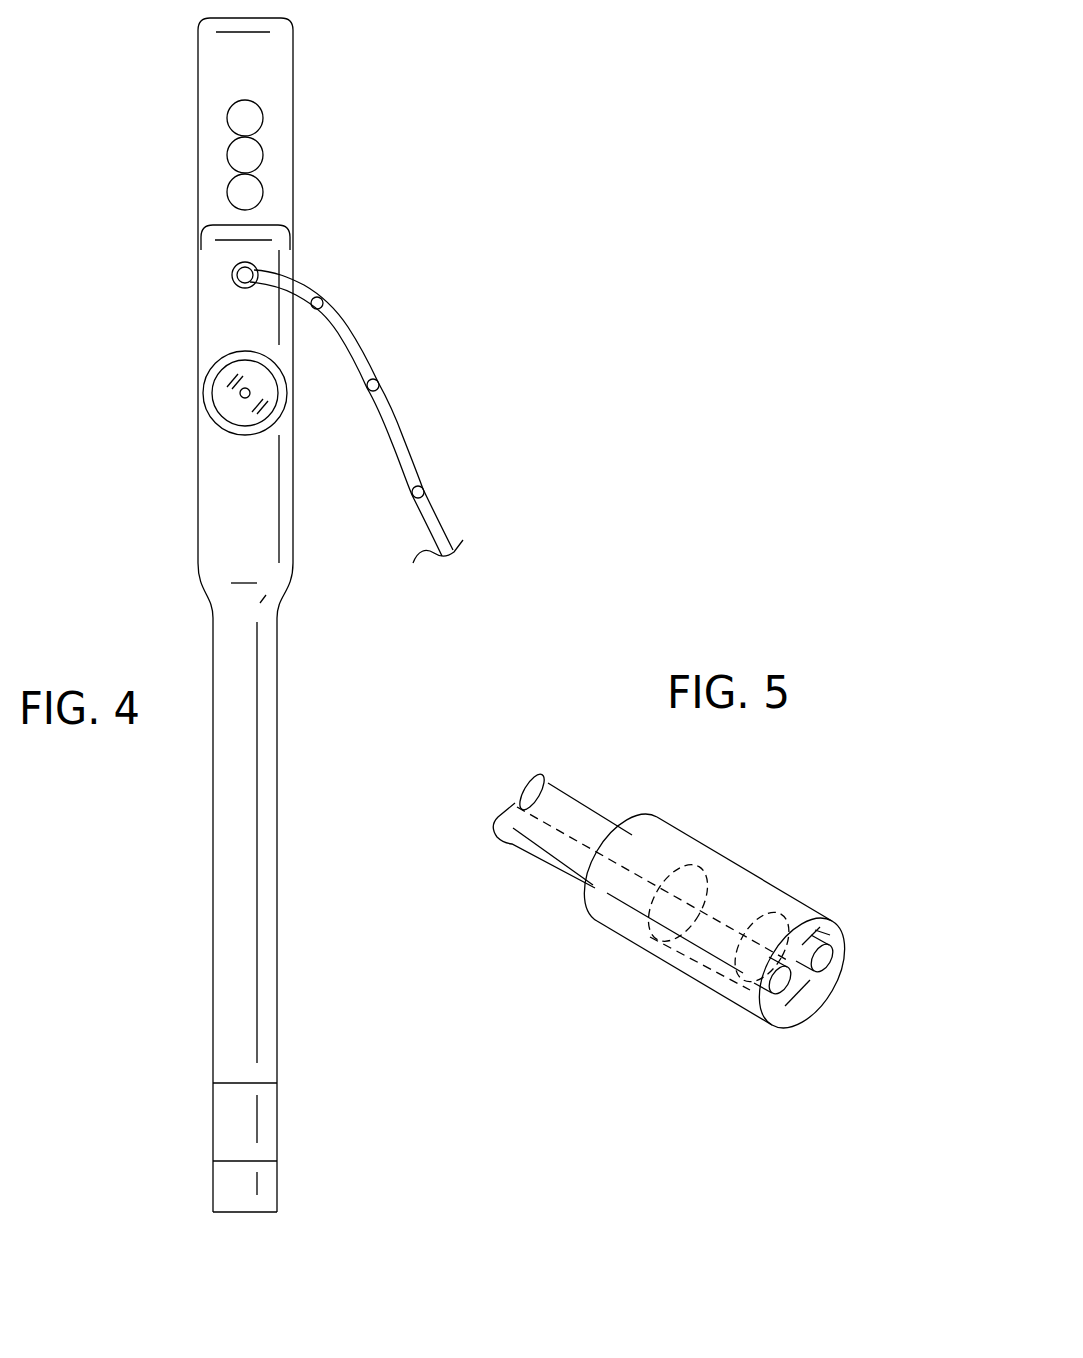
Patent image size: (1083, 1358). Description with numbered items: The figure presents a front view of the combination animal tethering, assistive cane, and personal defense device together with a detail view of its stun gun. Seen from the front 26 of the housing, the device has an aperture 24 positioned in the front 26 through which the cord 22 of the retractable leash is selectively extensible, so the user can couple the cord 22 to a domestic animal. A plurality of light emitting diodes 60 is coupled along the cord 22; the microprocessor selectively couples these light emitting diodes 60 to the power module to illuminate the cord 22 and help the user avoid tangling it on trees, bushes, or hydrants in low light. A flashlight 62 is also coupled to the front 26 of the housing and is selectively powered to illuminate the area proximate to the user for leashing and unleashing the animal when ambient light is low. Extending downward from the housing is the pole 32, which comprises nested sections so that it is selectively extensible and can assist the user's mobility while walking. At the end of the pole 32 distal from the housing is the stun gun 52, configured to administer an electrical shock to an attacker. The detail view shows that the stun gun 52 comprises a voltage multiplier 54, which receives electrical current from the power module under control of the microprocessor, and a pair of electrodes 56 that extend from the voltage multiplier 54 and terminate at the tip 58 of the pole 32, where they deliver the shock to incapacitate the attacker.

In FIG. 4, the cord 22 is at (402, 432).
In FIG. 4, the aperture 24 is at (232, 275).
In FIG. 4, the front 26 is at (226, 327).
In FIG. 4, the pole 32 is at (260, 843).
In FIG. 4, the stun gun 52 is at (240, 1130).
In FIG. 5, the voltage multiplier 54 is at (701, 893).
In FIG. 5, the pair of electrodes 56 is at (790, 982).
In FIG. 5, the tip 58 is at (838, 962).
In FIG. 4, the plurality of light emitting diodes 60 is at (325, 303).
In FIG. 4, the flashlight 62 is at (224, 403).